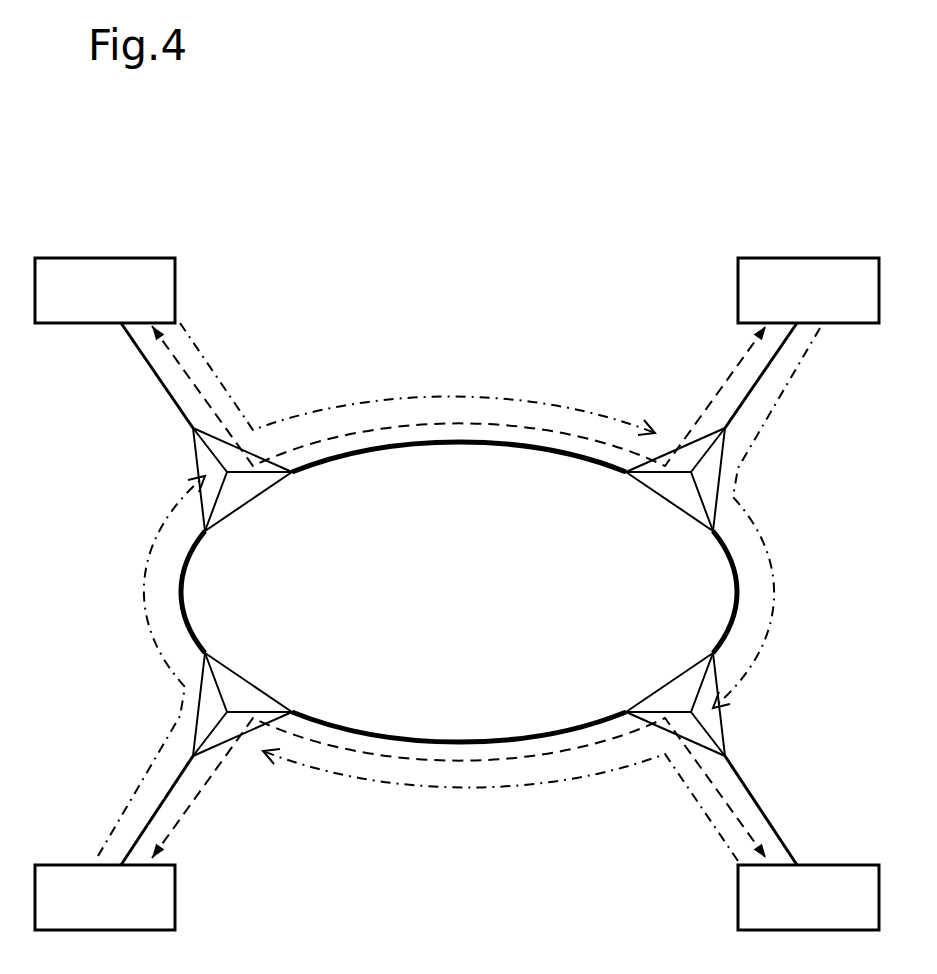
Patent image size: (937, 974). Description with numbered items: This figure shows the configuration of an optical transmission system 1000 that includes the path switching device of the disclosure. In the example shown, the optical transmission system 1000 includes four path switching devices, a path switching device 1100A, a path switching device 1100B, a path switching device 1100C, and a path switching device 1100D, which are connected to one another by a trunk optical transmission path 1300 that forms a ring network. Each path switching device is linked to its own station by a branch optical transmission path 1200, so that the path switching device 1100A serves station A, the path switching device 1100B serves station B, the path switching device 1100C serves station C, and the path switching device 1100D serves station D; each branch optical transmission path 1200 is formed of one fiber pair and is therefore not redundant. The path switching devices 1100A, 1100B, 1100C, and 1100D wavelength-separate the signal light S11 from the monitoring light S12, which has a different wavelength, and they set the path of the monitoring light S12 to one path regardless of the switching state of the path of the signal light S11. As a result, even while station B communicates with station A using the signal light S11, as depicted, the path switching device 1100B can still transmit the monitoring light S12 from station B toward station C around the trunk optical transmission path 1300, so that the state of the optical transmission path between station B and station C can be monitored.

The optical transmission system 1000 is at (582, 164).
The path switching device 1100A is at (250, 500).
The path switching device 1100B is at (660, 495).
The path switching device 1100C is at (660, 689).
The path switching device 1100D is at (250, 684).
The branch optical transmission path 1200 is at (167, 390).
The trunk optical transmission path 1300 is at (443, 444).
The signal light S11 is at (382, 426).
The monitoring light S12 is at (507, 394).